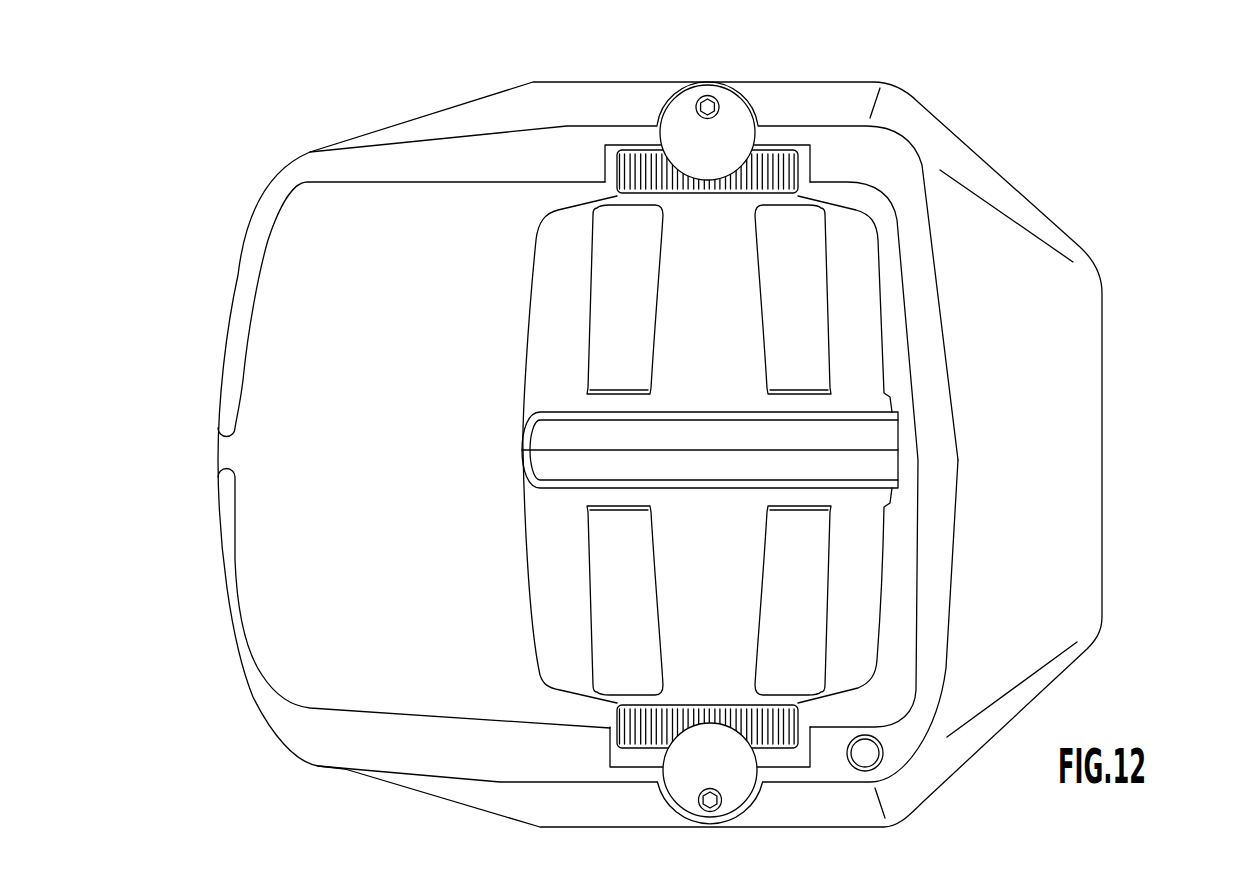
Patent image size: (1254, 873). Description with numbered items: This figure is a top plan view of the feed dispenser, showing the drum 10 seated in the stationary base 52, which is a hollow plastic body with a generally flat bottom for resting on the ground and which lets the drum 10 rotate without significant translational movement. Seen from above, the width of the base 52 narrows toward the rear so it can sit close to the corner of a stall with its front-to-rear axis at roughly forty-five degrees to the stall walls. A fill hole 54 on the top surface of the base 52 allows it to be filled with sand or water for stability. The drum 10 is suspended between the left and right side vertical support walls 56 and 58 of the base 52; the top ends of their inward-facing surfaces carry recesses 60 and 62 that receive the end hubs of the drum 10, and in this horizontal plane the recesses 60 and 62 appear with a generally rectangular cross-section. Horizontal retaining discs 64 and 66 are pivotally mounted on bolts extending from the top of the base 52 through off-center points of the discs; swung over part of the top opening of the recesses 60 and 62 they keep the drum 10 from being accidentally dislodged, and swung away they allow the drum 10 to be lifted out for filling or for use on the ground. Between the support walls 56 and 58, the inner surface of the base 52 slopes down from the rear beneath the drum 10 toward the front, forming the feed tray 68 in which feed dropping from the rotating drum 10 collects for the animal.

The drum 10 is at (724, 297).
The stationary base 52 is at (1150, 378).
The fill hole 54 is at (878, 756).
The left side vertical support wall 56 is at (832, 802).
The right side vertical support wall 58 is at (560, 155).
The recess 60 is at (627, 762).
The recess 62 is at (800, 153).
The horizontal retaining disc 64 is at (724, 777).
The horizontal retaining disc 66 is at (721, 154).
The feed tray 68 is at (313, 263).